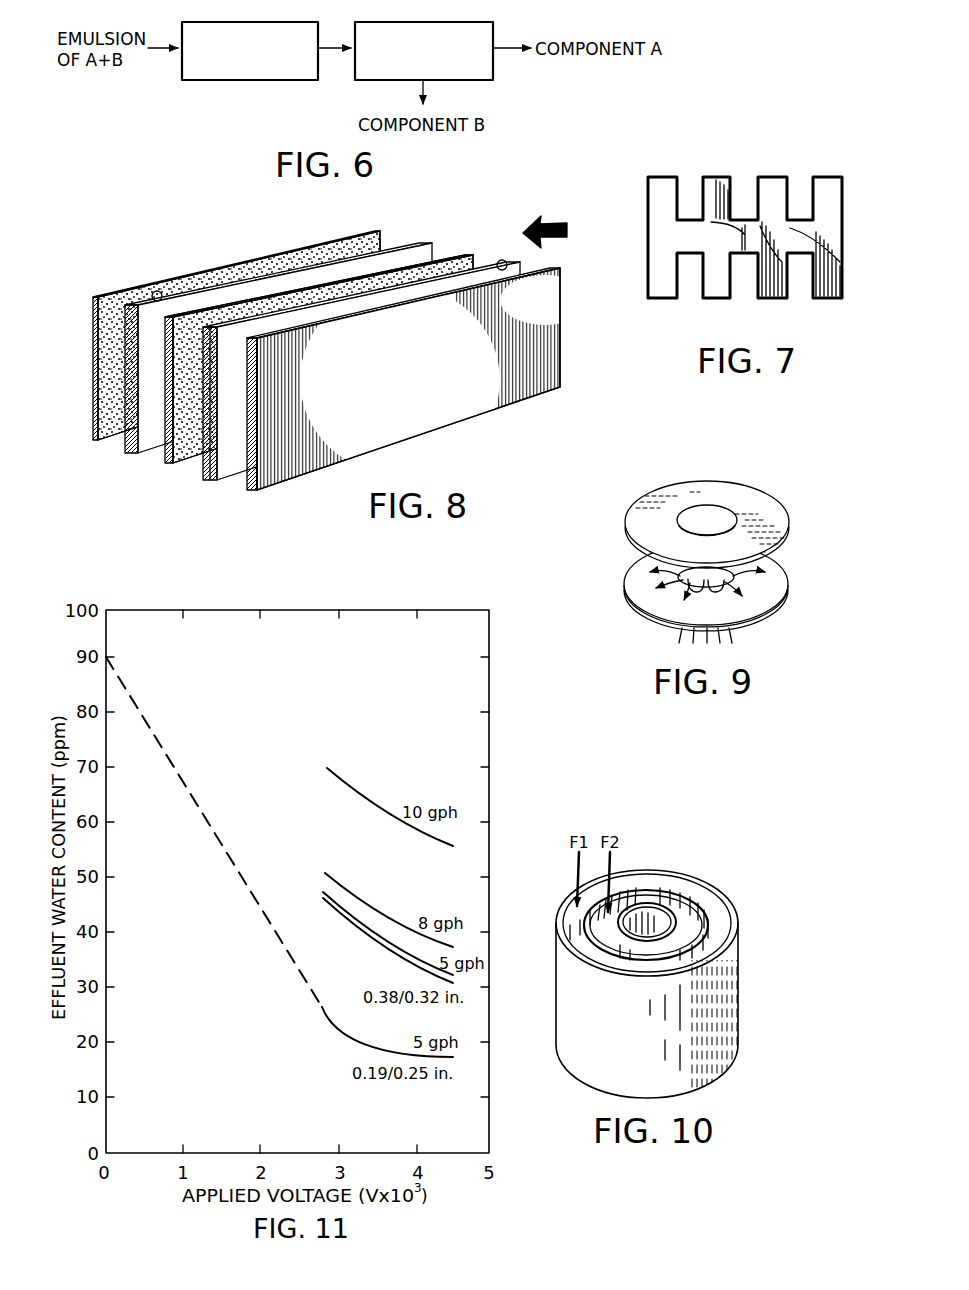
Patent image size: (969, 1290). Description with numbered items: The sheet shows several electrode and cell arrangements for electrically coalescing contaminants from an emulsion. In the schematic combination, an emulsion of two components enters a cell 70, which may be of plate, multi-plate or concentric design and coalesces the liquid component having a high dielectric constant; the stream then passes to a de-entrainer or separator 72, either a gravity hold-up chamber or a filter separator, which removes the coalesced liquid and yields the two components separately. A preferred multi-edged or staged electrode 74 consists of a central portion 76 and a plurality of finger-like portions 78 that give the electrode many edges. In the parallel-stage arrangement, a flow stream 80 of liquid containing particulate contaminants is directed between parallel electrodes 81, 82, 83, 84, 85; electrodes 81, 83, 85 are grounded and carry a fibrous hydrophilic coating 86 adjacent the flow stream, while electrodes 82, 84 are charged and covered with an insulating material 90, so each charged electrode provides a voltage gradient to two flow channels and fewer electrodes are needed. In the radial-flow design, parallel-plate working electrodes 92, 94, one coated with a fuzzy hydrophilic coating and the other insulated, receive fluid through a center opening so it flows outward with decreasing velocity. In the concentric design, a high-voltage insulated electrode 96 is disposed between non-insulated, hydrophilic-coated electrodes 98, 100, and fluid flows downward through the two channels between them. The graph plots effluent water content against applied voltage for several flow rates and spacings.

In FIG. 6, the cell 70 is at (238, 80).
In FIG. 6, the de-entrainer or separator 72 is at (473, 22).
In FIG. 7, the electrode 74 is at (740, 172).
In FIG. 7, the central portion 76 is at (807, 231).
In FIG. 7, the finger-like portions 78 is at (790, 176).
In FIG. 8, the flow stream 80 is at (552, 220).
In FIG. 8, the electrode 81 is at (93, 440).
In FIG. 8, the electrode 82 is at (127, 453).
In FIG. 8, the electrode 83 is at (168, 465).
In FIG. 8, the electrode 84 is at (212, 480).
In FIG. 8, the electrode 85 is at (257, 495).
In FIG. 8, the fibrous hydrophilic coating 86 is at (173, 397).
In FIG. 8, the insulating material 90 is at (153, 291).
In FIG. 9, the electrode 92 is at (765, 493).
In FIG. 9, the electrode 94 is at (780, 602).
In FIG. 10, the electrode 96 is at (670, 882).
In FIG. 10, the electrode 98 is at (678, 918).
In FIG. 10, the electrode 100 is at (738, 927).